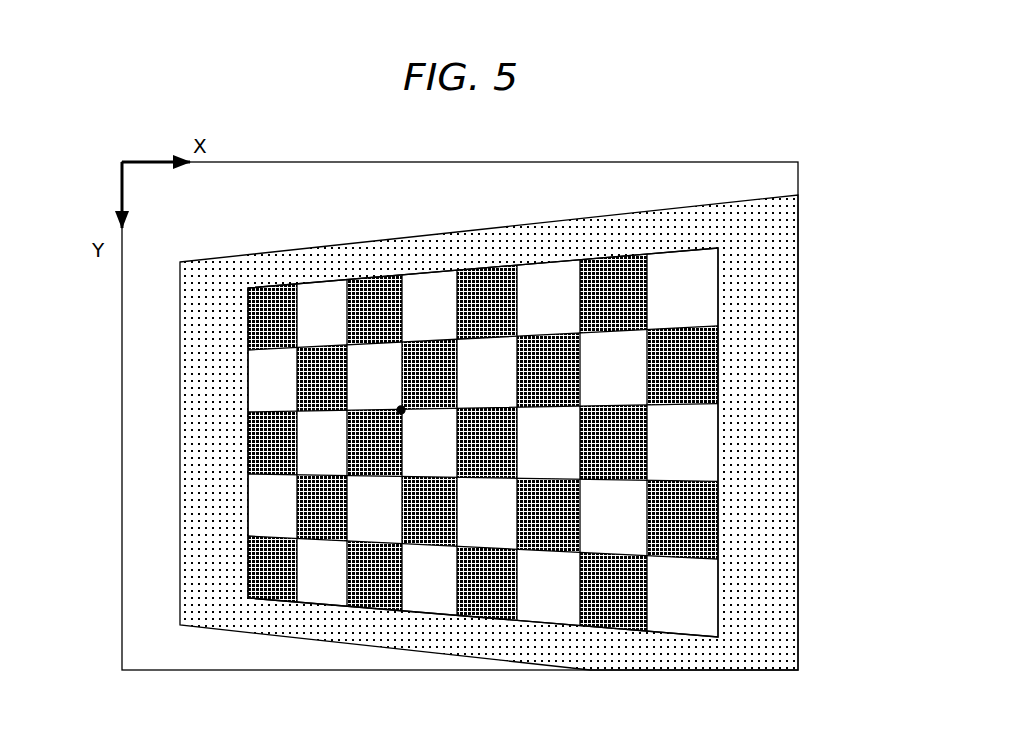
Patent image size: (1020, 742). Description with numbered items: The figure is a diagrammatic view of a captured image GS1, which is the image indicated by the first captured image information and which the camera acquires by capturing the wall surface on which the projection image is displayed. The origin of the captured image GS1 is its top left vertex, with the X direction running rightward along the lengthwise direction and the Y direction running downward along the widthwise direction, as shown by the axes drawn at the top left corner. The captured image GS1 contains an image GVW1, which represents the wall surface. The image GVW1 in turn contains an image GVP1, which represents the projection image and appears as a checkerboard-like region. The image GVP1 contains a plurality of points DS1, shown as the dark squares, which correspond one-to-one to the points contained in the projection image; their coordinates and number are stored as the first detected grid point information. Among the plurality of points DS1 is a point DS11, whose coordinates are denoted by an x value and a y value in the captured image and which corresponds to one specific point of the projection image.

The captured image GS1 is at (122, 510).
The image representing the wall surface GVW1 is at (302, 637).
The image representing the projection image GVP1 is at (570, 381).
The points DS1 is at (587, 545).
The point DS11 is at (401, 410).